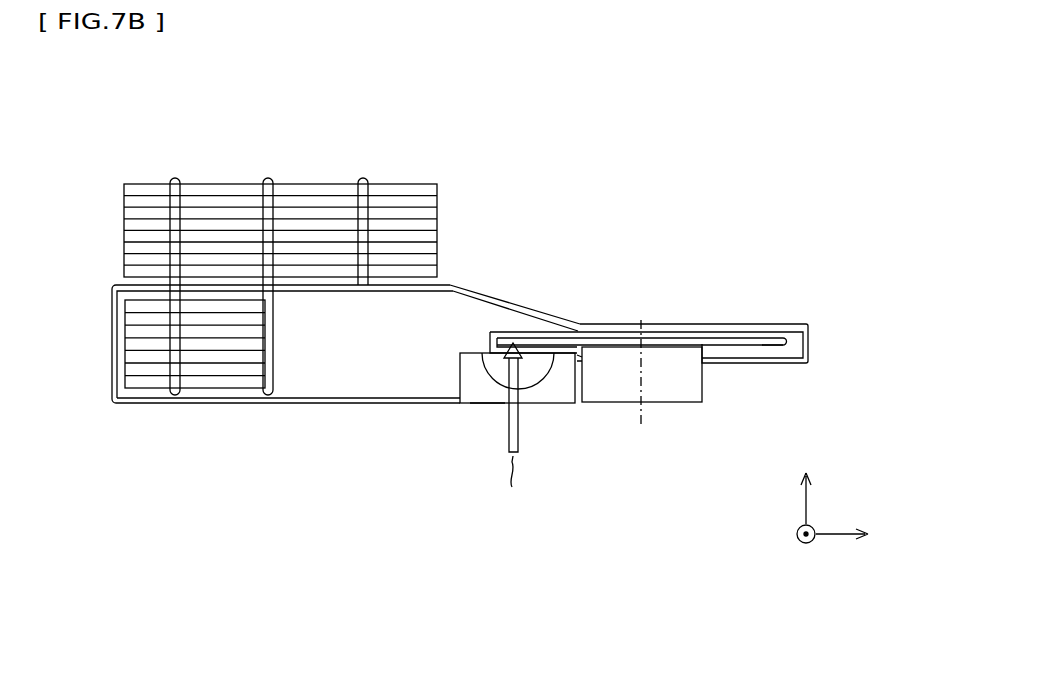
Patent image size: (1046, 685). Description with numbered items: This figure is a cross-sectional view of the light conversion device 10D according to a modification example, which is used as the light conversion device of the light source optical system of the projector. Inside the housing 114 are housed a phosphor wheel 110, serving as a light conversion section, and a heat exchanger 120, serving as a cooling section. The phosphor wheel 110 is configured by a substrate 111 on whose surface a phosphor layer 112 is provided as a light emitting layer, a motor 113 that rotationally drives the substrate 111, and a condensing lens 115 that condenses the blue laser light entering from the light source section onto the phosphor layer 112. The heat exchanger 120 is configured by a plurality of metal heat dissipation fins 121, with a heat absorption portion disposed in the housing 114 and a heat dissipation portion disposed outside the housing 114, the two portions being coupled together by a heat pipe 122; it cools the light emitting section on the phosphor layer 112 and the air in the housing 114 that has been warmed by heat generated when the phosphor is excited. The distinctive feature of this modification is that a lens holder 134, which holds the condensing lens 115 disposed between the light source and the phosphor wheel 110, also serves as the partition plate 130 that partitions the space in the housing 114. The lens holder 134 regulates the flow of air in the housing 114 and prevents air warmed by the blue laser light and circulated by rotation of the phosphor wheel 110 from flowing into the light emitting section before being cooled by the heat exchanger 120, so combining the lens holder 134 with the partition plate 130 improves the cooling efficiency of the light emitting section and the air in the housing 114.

The light conversion device 10D is at (727, 147).
The heat exchanger 120 is at (392, 148).
The heat dissipation fins 121 is at (299, 183).
The heat pipe 122 is at (175, 181).
The partition plate 130 is at (389, 367).
The housing 114 is at (515, 304).
The phosphor wheel 110 is at (780, 330).
The substrate 111 is at (789, 338).
The phosphor layer 112 is at (772, 345).
The motor 113 is at (688, 404).
The condensing lens 115 is at (548, 380).
The lens holder 134 is at (487, 404).